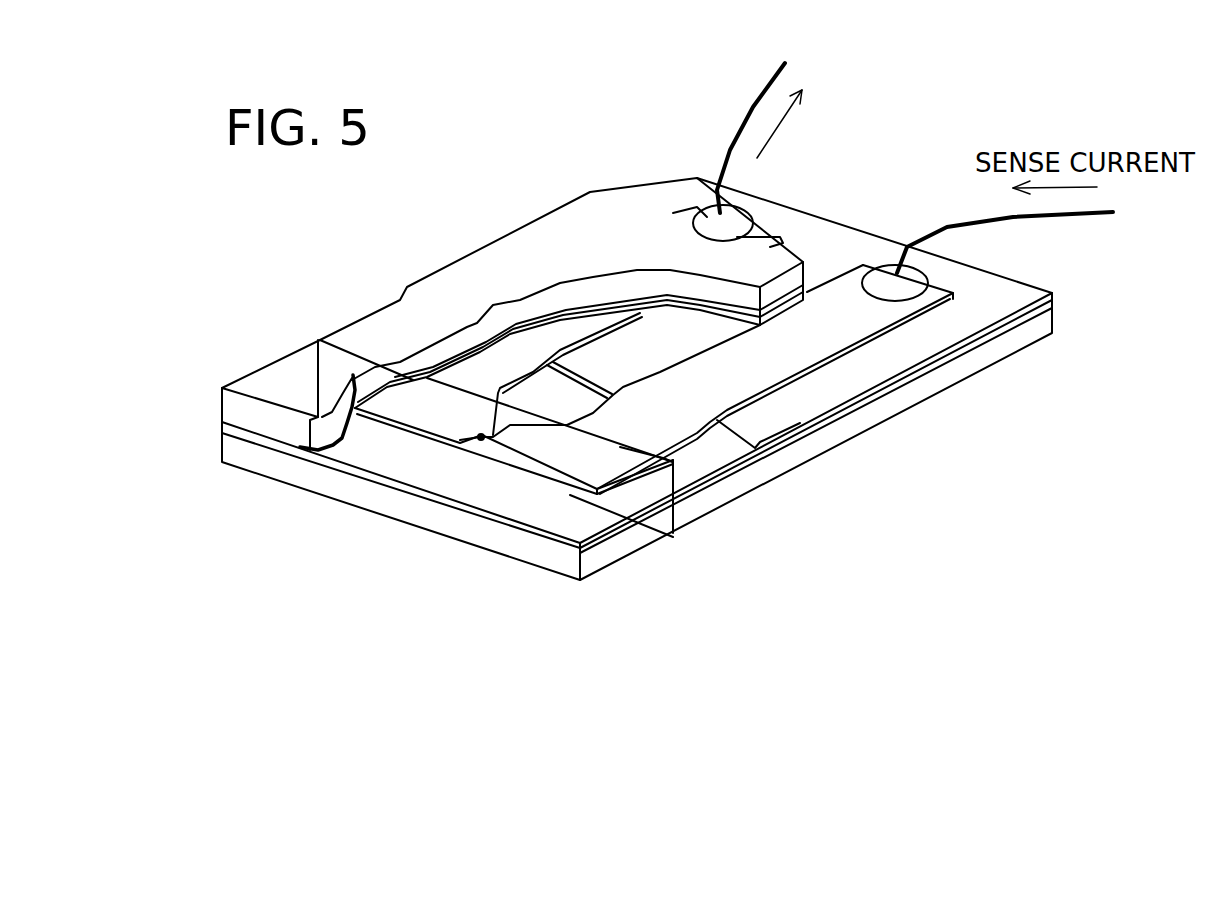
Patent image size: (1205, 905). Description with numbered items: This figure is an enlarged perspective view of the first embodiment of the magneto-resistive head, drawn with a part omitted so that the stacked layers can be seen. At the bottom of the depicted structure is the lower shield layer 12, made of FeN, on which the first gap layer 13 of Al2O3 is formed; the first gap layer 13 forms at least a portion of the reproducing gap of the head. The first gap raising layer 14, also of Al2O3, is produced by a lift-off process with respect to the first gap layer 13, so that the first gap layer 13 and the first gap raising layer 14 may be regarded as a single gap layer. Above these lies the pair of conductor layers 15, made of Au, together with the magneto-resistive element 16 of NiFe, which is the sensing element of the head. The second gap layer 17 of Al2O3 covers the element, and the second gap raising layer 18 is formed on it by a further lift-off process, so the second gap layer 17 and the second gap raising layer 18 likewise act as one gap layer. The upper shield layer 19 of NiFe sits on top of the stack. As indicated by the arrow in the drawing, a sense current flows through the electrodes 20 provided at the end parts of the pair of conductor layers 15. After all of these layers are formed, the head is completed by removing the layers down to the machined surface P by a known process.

The lower shield layer 12 is at (637, 474).
The first gap layer 13 is at (637, 462).
The first gap raising layer 14 is at (666, 360).
The conductor layers 15 is at (633, 316).
The magneto-resistive element 16 is at (530, 446).
The second gap layer 17 is at (598, 373).
The second gap raising layer 18 is at (775, 306).
The upper shield layer 19 is at (512, 285).
The electrodes 20 is at (893, 182).
The machined surface P is at (362, 328).